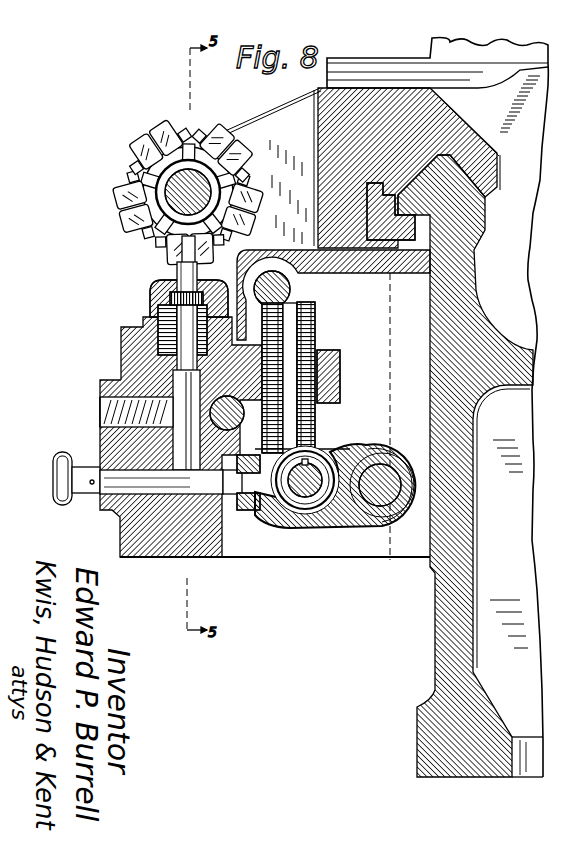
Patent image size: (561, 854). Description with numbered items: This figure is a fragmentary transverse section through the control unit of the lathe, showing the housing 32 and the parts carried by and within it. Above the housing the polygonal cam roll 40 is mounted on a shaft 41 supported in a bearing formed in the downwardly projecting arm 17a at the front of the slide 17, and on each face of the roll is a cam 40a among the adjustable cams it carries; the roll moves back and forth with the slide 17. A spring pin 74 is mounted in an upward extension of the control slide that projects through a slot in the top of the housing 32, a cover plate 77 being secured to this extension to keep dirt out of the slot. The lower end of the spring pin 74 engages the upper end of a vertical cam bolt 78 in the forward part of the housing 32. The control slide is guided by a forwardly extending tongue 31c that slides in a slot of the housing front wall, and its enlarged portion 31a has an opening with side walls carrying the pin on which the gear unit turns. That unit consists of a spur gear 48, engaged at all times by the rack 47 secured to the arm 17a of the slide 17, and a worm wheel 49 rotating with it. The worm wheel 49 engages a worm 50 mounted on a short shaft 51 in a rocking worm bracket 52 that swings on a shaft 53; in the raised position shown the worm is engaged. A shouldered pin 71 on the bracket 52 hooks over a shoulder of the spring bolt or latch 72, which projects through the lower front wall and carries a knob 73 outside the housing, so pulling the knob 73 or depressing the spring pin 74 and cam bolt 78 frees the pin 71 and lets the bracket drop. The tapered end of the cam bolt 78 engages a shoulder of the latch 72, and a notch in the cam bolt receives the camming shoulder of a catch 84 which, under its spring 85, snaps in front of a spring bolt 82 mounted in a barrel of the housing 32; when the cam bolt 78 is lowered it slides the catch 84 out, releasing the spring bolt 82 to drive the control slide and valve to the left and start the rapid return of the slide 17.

The slide 17 is at (450, 122).
The downwardly projecting arm 17a is at (258, 128).
The cam roll 40 is at (232, 190).
The shaft 41 is at (148, 187).
The cam 40a is at (172, 245).
The spring pin 74 is at (197, 274).
The cover plate 77 is at (152, 303).
The enlarged portion of the control slide 31a is at (340, 358).
The guide plate or tongue 31c is at (143, 355).
The cam bolt 78 is at (186, 440).
The catch 84 is at (188, 417).
The spring 85 is at (100, 410).
The spur gear 48 is at (227, 426).
The knob 73 is at (63, 507).
The shouldered pin 71 is at (231, 507).
The spring bolt or latch 72 is at (246, 520).
The spring bolt 82 is at (241, 462).
The rack 47 is at (292, 284).
The worm wheel 49 is at (313, 333).
The rocking worm bracket 52 is at (352, 522).
The worm 50 is at (281, 522).
The short shaft 51 is at (306, 470).
The shaft 53 is at (382, 508).
The housing 32 is at (300, 558).